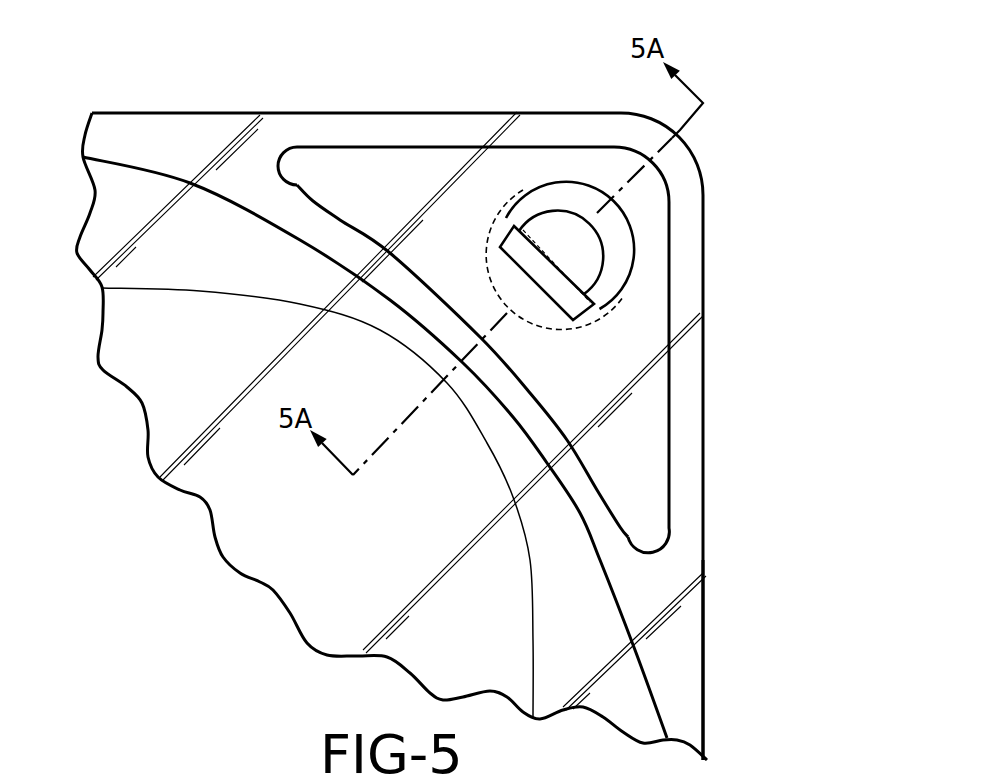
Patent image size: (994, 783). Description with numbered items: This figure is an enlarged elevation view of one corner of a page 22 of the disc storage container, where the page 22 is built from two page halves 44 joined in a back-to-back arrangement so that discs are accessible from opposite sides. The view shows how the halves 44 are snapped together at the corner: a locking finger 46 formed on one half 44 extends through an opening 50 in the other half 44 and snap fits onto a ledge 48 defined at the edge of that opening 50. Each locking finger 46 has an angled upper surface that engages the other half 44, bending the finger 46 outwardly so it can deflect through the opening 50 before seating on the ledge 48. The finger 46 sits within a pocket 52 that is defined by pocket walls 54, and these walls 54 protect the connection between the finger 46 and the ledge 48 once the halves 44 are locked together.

The page 22 is at (716, 440).
The page half 44 is at (714, 617).
The locking finger 46 is at (593, 257).
The ledge 48 is at (575, 310).
The opening 50 is at (608, 223).
The pocket 52 is at (395, 178).
The pocket wall 54 is at (318, 223).